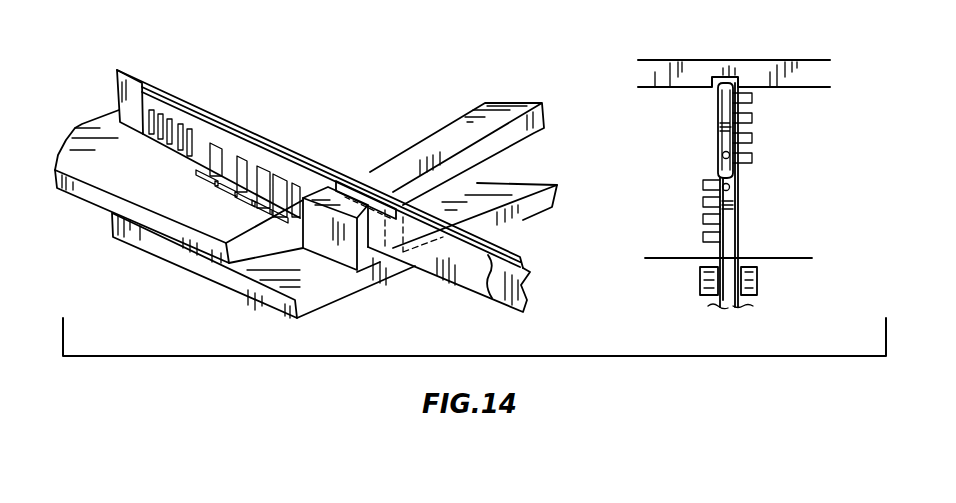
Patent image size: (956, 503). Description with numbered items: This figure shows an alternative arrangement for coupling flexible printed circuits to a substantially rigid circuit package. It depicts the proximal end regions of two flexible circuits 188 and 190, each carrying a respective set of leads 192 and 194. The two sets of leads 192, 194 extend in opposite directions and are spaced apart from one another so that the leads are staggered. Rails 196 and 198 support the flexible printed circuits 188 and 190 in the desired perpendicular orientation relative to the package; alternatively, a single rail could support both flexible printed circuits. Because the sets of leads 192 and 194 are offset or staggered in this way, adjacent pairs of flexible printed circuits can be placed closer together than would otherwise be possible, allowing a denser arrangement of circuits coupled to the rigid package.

The flexible circuit 188 is at (177, 110).
The flexible circuit 190 is at (303, 176).
The set of leads 192 is at (750, 142).
The set of leads 194 is at (205, 184).
The rail 196 is at (348, 252).
The rail 198 is at (362, 176).